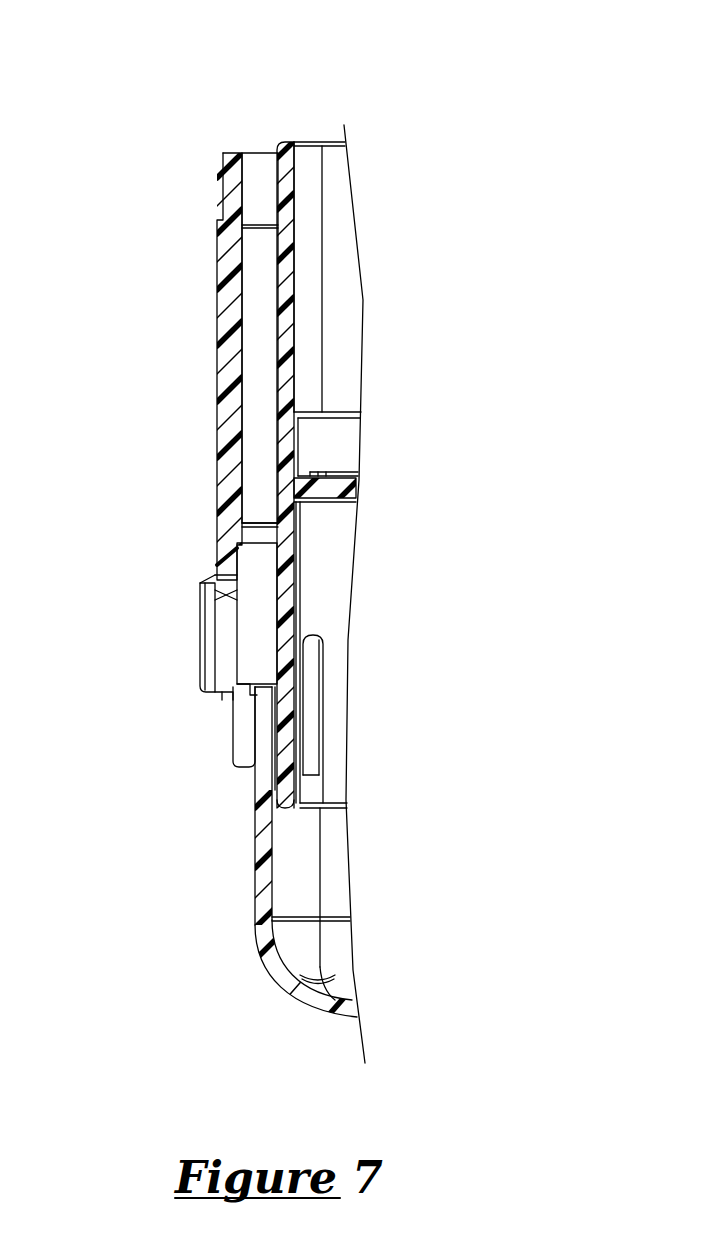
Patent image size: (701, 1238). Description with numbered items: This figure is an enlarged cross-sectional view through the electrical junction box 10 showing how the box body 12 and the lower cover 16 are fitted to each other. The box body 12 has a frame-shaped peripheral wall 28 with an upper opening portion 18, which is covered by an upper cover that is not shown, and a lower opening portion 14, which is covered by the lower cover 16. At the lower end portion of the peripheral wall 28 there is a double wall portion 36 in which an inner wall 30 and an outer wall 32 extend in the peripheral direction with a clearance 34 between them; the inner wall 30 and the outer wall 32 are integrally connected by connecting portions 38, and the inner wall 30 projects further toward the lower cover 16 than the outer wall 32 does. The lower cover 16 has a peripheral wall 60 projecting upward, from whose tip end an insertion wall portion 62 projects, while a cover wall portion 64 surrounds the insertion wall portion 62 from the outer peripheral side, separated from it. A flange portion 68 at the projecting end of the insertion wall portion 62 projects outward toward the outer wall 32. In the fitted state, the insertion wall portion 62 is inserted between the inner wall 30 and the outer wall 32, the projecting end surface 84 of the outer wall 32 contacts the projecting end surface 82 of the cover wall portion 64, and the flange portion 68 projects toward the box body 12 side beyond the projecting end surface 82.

The electrical junction box 10 is at (306, 78).
The box body 12 is at (182, 262).
The lower opening portion 14 is at (298, 850).
The lower cover 16 is at (263, 993).
The upper opening portion 18 is at (305, 117).
The peripheral wall 28 is at (230, 380).
The inner wall 30 is at (285, 590).
The outer wall 32 is at (230, 600).
The clearance 34 is at (240, 630).
The double wall portion 36 is at (135, 540).
The connecting portions 38 is at (262, 528).
The peripheral wall 60 is at (268, 858).
The insertion wall portion 62 is at (268, 747).
The cover wall portion 64 is at (225, 730).
The flange portion 68 is at (248, 678).
The projecting end surface 82 is at (230, 690).
The projecting end surface 84 is at (222, 695).